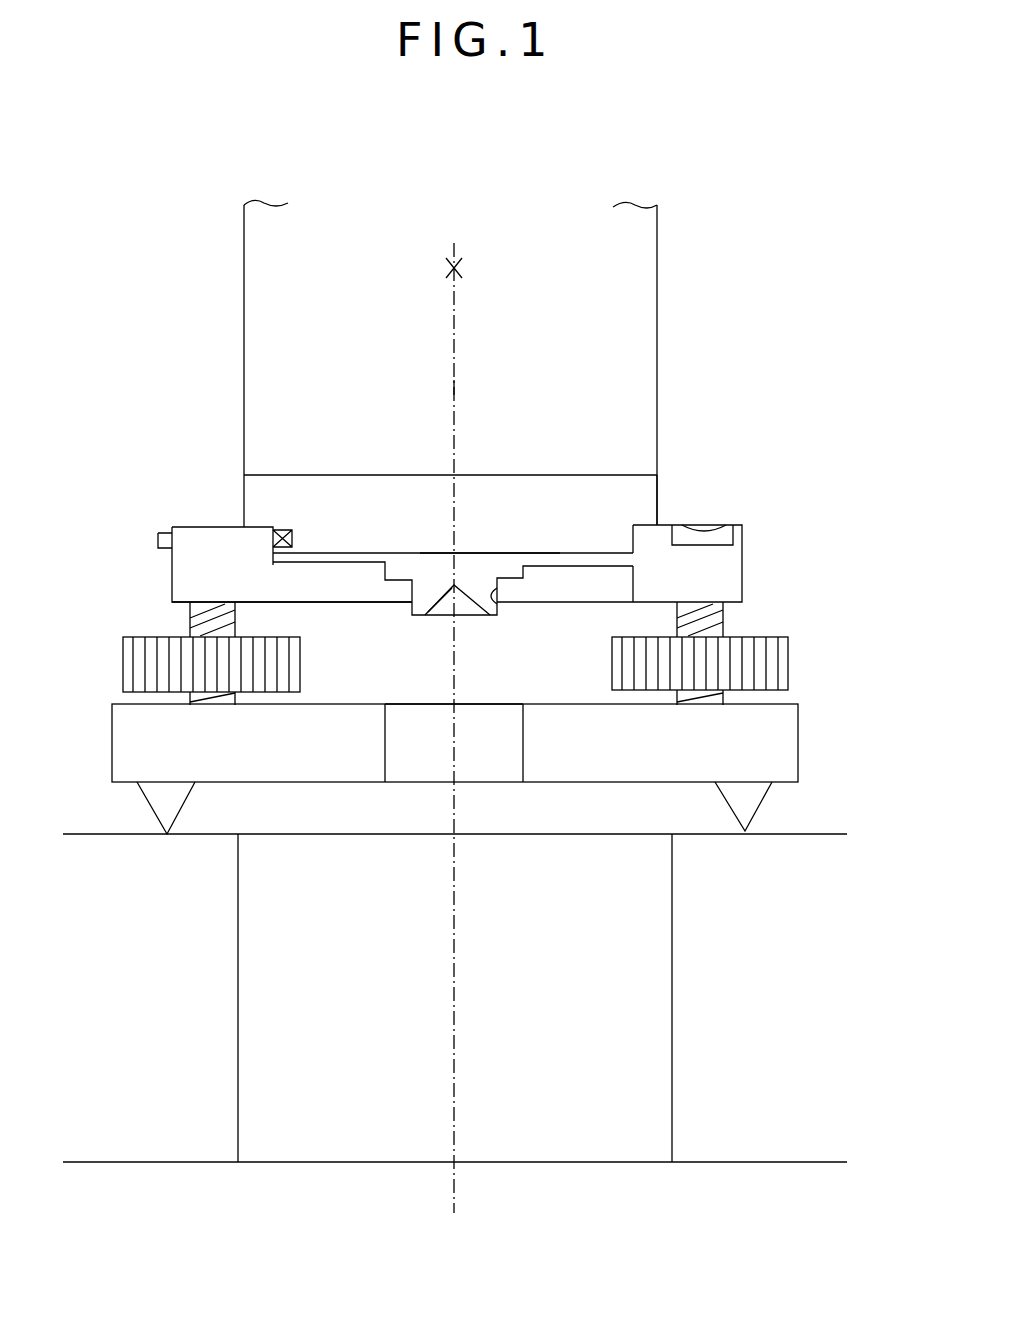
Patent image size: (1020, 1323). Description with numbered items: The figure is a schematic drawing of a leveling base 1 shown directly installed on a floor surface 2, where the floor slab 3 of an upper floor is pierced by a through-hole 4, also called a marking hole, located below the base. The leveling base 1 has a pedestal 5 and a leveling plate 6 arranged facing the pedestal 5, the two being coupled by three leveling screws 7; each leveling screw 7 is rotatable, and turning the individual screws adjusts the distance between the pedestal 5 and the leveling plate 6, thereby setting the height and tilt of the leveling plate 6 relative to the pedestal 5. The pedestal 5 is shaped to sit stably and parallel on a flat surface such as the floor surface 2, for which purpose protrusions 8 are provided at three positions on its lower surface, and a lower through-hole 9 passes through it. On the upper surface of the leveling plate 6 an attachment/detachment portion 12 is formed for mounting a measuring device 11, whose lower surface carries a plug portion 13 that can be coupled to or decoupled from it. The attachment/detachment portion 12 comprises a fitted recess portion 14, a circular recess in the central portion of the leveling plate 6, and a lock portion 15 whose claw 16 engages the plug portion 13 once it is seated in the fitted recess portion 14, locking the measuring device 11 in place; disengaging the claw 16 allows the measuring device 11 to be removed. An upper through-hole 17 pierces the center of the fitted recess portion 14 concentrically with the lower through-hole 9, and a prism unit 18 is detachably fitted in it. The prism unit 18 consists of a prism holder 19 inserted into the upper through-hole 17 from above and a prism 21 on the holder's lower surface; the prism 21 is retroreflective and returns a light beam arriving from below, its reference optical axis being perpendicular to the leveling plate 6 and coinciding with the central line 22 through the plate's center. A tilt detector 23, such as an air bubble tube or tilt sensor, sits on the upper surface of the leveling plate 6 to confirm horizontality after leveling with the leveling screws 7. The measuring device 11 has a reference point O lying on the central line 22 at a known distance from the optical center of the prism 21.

The leveling base 1 is at (202, 525).
The floor surface 2 is at (102, 832).
The floor slab 3 is at (181, 1135).
The through-hole 4 is at (568, 1138).
The pedestal 5 is at (800, 715).
The leveling plate 6 is at (742, 565).
The leveling screws 7 is at (790, 653).
The protrusions 8 is at (758, 800).
The lower through-hole 9 is at (485, 718).
The measuring device 11 is at (660, 272).
The attachment/detachment portion 12 is at (648, 540).
The plug portion 13 is at (657, 485).
The fitted recess portion 14 is at (554, 550).
The lock portion 15 is at (278, 532).
The claw 16 is at (160, 546).
The upper through-hole 17 is at (497, 610).
The prism unit 18 is at (478, 560).
The prism holder 19 is at (427, 585).
The prism 21 is at (466, 616).
The central line 22 is at (456, 385).
The tilt detector 23 is at (728, 524).
The reference point O is at (453, 264).